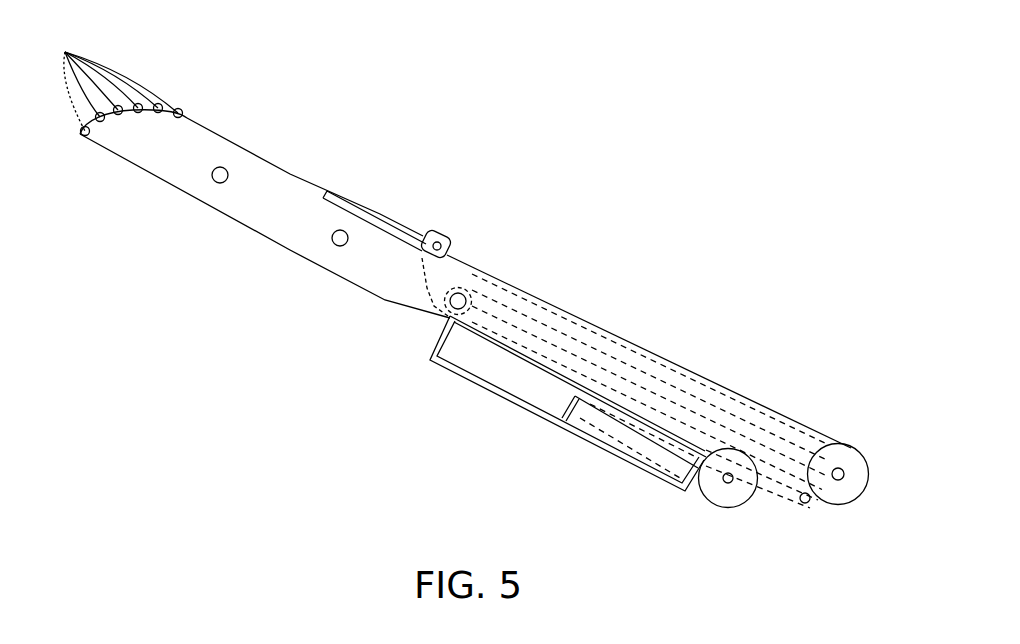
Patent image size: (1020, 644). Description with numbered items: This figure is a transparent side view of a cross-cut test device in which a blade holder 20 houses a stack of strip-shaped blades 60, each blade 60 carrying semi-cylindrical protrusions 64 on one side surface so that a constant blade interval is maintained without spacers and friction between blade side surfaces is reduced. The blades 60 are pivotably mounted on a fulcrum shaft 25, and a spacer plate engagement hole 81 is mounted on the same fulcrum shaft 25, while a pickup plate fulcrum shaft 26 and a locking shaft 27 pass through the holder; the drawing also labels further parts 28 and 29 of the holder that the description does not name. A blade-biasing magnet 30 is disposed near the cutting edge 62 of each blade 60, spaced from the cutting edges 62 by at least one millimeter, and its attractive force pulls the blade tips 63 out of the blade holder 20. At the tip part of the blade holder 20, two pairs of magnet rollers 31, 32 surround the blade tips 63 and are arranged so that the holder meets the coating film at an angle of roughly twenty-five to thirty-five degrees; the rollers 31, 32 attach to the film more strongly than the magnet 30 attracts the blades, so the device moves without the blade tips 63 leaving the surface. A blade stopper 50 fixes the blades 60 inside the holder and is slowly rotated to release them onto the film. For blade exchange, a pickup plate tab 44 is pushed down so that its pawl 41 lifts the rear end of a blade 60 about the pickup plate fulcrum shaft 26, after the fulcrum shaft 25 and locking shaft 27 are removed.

The blade holder 20 is at (762, 404).
The fulcrum shaft 25 is at (463, 291).
The pickup plate fulcrum shaft 26 is at (336, 247).
The locking shaft 27 is at (213, 183).
The hinge 28 is at (430, 234).
The housing box 29 is at (467, 380).
The magnet 30 is at (665, 455).
The magnet roller 31 is at (838, 444).
The magnet roller 32 is at (720, 491).
The pawl 41 is at (440, 318).
The tab 44 is at (114, 78).
The blade stopper 50 is at (337, 190).
The blade 60 is at (657, 370).
The cutting edge 62 is at (612, 408).
The blade tip 63 is at (806, 505).
The semi-cylindrical protrusion 64 is at (555, 352).
The engagement hole 81 is at (478, 284).